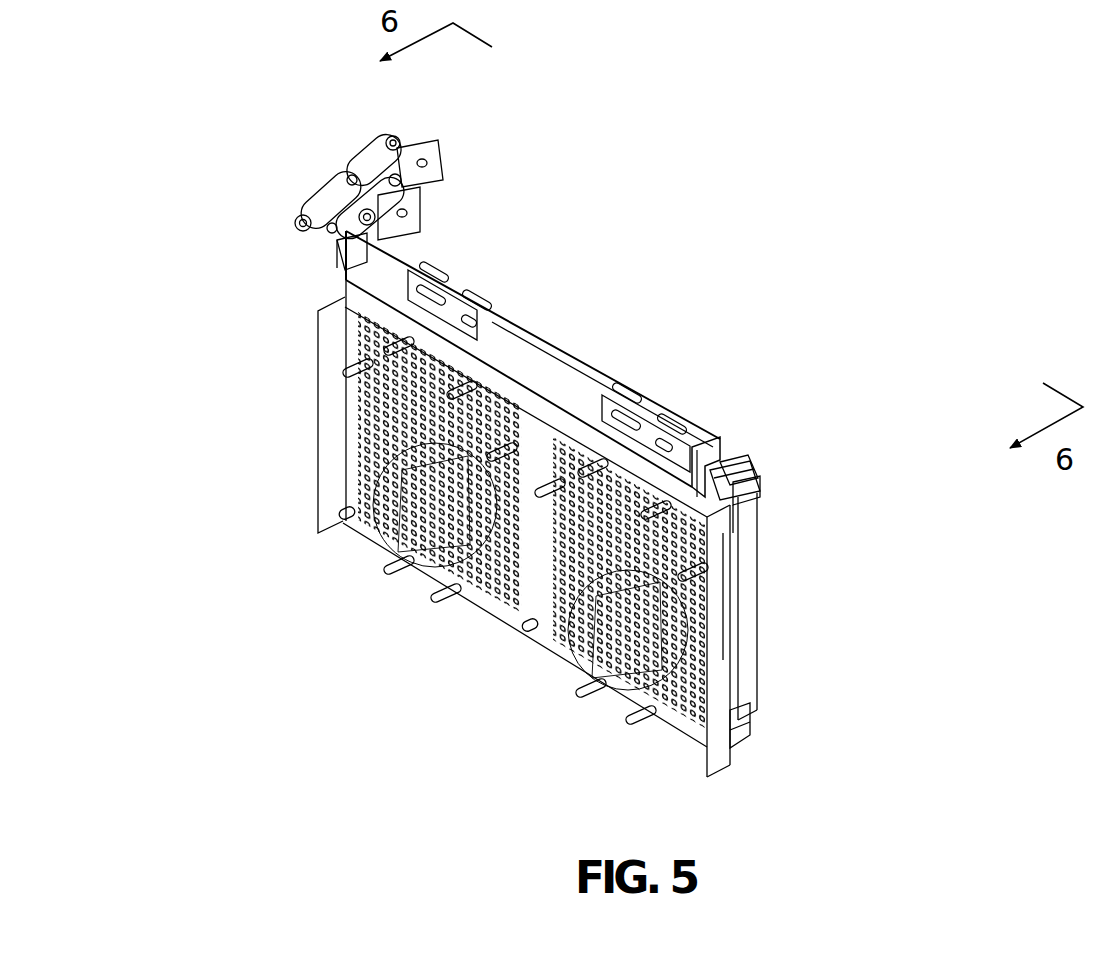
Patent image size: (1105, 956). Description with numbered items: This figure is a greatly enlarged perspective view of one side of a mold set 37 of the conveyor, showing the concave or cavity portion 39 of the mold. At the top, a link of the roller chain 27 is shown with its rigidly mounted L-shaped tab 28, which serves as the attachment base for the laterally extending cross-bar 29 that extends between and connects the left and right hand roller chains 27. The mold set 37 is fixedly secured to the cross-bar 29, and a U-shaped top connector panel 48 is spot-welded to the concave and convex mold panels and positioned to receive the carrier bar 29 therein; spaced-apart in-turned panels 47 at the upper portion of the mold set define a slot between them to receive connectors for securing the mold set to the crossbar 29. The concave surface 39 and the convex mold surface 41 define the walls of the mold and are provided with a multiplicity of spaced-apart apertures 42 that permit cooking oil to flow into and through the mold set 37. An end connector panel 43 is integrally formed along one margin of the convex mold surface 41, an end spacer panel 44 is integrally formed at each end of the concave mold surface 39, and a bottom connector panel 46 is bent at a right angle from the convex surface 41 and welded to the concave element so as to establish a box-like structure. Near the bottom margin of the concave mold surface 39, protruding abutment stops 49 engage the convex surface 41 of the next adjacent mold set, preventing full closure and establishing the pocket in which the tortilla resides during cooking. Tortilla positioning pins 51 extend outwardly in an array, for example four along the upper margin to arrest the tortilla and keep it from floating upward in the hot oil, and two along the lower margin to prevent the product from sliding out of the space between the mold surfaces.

The roller chain 27 is at (403, 127).
The L-shaped tab 28 is at (435, 157).
The cross-bar 29 is at (717, 473).
The mold set 37 is at (443, 260).
The concave mold surface 39 is at (623, 480).
The convex mold surface 41 is at (755, 523).
The apertures 42 is at (600, 672).
The end connector panel 43 is at (745, 647).
The end spacer panel 44 is at (330, 430).
The bottom connector panel 46 is at (733, 733).
The in-turned panels 47 is at (747, 482).
The U-shaped top connector panel 48 is at (502, 308).
The abutment stops 49 is at (340, 520).
The tortilla positioning pins 51 is at (560, 445).